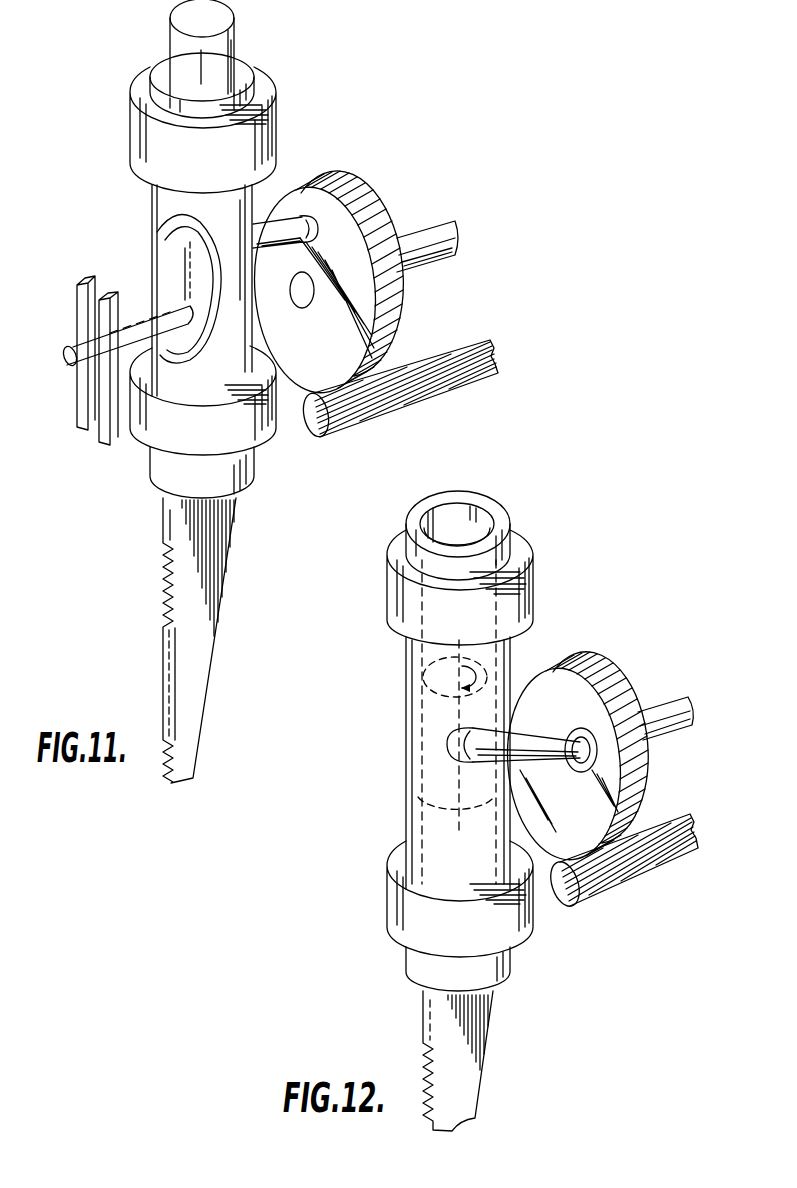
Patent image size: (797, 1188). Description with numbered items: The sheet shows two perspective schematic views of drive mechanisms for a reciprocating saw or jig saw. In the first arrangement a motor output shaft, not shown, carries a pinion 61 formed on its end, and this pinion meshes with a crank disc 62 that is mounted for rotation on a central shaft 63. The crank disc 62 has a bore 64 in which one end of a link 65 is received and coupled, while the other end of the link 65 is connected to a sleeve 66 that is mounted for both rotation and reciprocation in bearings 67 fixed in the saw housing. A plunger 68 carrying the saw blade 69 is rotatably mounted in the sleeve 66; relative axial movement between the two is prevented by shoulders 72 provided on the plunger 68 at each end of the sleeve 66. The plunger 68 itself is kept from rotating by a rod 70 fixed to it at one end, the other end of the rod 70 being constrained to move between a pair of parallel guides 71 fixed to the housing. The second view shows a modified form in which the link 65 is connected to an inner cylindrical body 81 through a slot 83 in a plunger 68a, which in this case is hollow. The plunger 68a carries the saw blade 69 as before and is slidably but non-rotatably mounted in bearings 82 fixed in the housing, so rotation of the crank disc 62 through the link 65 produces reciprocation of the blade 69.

In FIG. 11, the pinion 61 is at (453, 390).
In FIG. 12, the pinion 61 is at (640, 867).
In FIG. 11, the crank disc 62 is at (397, 313).
In FIG. 12, the crank disc 62 is at (640, 783).
In FIG. 11, the central shaft 63 is at (458, 238).
In FIG. 12, the central shaft 63 is at (660, 710).
In FIG. 11, the bore 64 is at (320, 222).
In FIG. 11, the link 65 is at (270, 232).
In FIG. 12, the link 65 is at (530, 745).
In FIG. 11, the sleeve 66 is at (178, 200).
In FIG. 11, the bearings 67 is at (130, 124).
In FIG. 11, the plunger 68 is at (190, 262).
In FIG. 12, the plunger 68a is at (418, 773).
In FIG. 11, the saw blade 69 is at (200, 672).
In FIG. 12, the saw blade 69 is at (470, 1085).
In FIG. 11, the rod 70 is at (133, 315).
In FIG. 11, the parallel guides 71 is at (92, 344).
In FIG. 11, the shoulders 72 is at (248, 77).
In FIG. 12, the inner cylindrical body 81 is at (440, 678).
In FIG. 12, the bearings 82 is at (512, 592).
In FIG. 12, the slot 83 is at (512, 717).